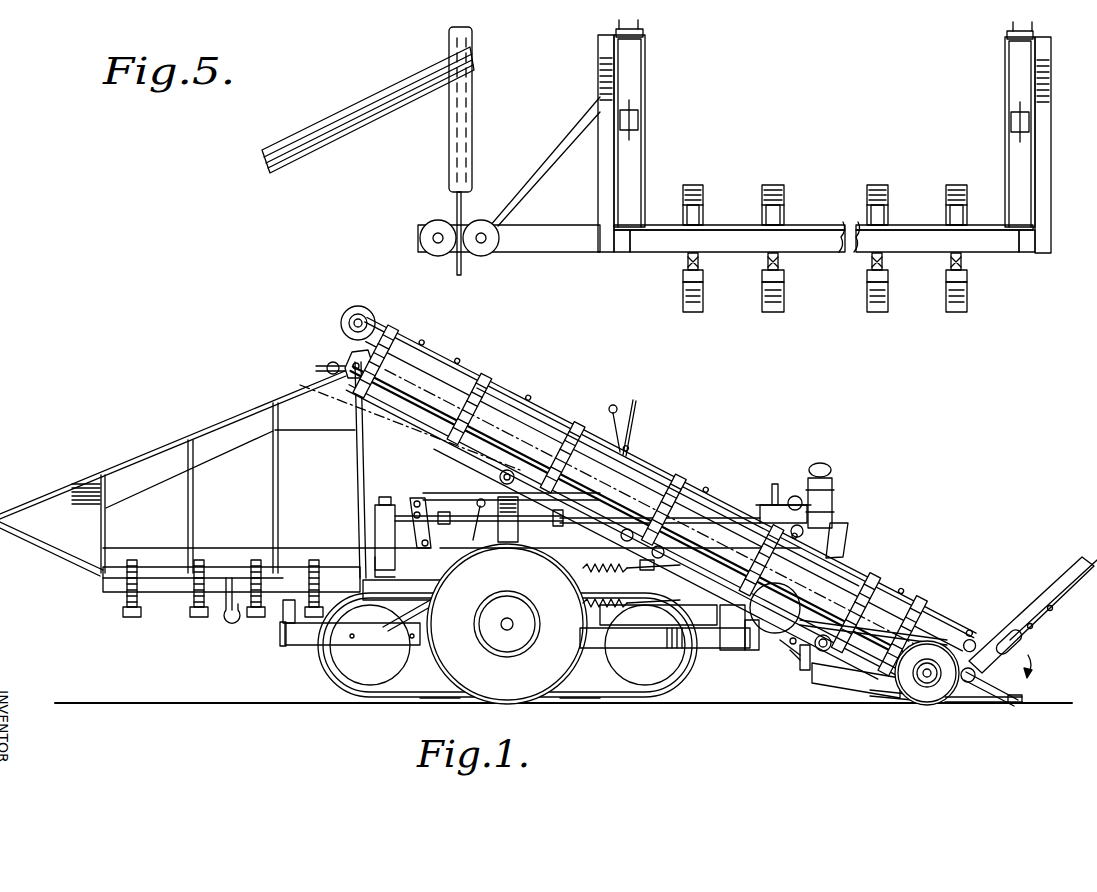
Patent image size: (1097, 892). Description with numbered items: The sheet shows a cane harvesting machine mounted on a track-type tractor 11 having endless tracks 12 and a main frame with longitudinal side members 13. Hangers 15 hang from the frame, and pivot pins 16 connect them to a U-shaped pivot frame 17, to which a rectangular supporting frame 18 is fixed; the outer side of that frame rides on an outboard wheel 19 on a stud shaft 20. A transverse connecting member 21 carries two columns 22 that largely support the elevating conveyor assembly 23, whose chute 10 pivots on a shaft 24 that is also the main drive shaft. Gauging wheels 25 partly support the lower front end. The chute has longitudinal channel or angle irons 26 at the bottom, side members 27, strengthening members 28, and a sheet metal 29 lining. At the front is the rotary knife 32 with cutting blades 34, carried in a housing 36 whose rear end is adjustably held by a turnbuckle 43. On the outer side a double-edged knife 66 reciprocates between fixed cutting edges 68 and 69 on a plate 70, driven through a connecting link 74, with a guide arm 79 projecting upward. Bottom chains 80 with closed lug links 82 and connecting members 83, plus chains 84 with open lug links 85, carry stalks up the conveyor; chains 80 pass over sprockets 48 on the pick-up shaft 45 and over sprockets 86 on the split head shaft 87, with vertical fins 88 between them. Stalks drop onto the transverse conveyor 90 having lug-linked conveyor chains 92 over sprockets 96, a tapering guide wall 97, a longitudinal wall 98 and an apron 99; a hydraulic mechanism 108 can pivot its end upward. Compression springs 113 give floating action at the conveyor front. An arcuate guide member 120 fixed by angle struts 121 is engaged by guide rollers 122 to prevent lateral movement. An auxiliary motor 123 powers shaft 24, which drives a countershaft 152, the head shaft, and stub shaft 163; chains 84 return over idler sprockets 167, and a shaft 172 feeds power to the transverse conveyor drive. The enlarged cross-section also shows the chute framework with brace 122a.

In FIG. 5, the chute 10 is at (652, 66).
In FIG. 1, the tractor 11 is at (358, 675).
In FIG. 1, the endless tracks 12 is at (322, 668).
In FIG. 1, the longitudinal side members 13 is at (386, 600).
In FIG. 1, the hangers 15 is at (290, 614).
In FIG. 1, the pivot pins 16 is at (280, 634).
In FIG. 1, the pivot frame 17 is at (717, 636).
In FIG. 1, the supporting frame 18 is at (596, 640).
In FIG. 1, the outboard wheel 19 is at (466, 700).
In FIG. 1, the stud shaft 20 is at (507, 630).
In FIG. 1, the transverse connecting member 21 is at (654, 628).
In FIG. 1, the columns 22 is at (510, 536).
In FIG. 1, the elevating conveyor assembly 23 is at (455, 360).
In FIG. 1, the shaft 24 is at (498, 482).
In FIG. 1, the gauging wheels 25 is at (930, 698).
In FIG. 5, the longitudinal channel or angle irons 26 is at (624, 254).
In FIG. 1, the longitudinal channel or angle irons 26 is at (420, 425).
In FIG. 5, the side members 27 is at (600, 66).
In FIG. 1, the side members 27 is at (483, 386).
In FIG. 1, the longitudinal strengthening members 28 is at (480, 474).
In FIG. 5, the sheet metal 29 is at (645, 143).
In FIG. 1, the sheet metal 29 is at (574, 430).
In FIG. 1, the knife 32 is at (892, 695).
In FIG. 1, the cutting blades 34 is at (958, 702).
In FIG. 1, the housing 36 is at (832, 684).
In FIG. 1, the turnbuckle 43 is at (783, 670).
In FIG. 1, the pick-up shaft 45 is at (802, 660).
In FIG. 5, the sprockets 48 is at (687, 260).
In FIG. 1, the double-edged knife 66 is at (1020, 650).
In FIG. 1, the fixed cutting edge 68 is at (1013, 704).
In FIG. 1, the fixed cutting edge 69 is at (1014, 634).
In FIG. 1, the plate 70 is at (987, 692).
In FIG. 1, the connecting link 74 is at (918, 617).
In FIG. 1, the guide arm 79 is at (1065, 582).
In FIG. 5, the bottom chains 80 is at (692, 210).
In FIG. 5, the closed lug links 82 is at (762, 295).
In FIG. 5, the connecting member 83 is at (773, 188).
In FIG. 5, the chains 84 is at (630, 33).
In FIG. 1, the open lug links 85 is at (548, 405).
In FIG. 1, the sprockets 86 is at (300, 385).
In FIG. 1, the split head shaft 87 is at (330, 368).
In FIG. 1, the vertical fins 88 is at (316, 368).
In FIG. 1, the transverse conveyor 90 is at (160, 586).
In FIG. 1, the lug-linked conveyor chains 92 is at (128, 595).
In FIG. 1, the sprockets 96 is at (112, 573).
In FIG. 1, the tapering guide wall 97 is at (140, 470).
In FIG. 1, the longitudinal wall 98 is at (364, 473).
In FIG. 1, the apron 99 is at (55, 503).
In FIG. 1, the hydraulic mechanism 108 is at (228, 626).
In FIG. 1, the compression springs 113 is at (600, 566).
In FIG. 5, the arcuate guide member 120 is at (473, 86).
In FIG. 1, the arcuate guide member 120 is at (846, 530).
In FIG. 5, the angle struts 121 is at (310, 130).
In FIG. 5, the guide rollers 122 is at (438, 256).
In FIG. 5, the brace 122a is at (556, 178).
In FIG. 1, the auxiliary motor 123 is at (750, 492).
In FIG. 1, the countershaft 152 is at (430, 440).
In FIG. 1, the stub shaft 163 is at (348, 324).
In FIG. 1, the idler sprockets 167 is at (694, 500).
In FIG. 1, the shaft 172 is at (476, 532).